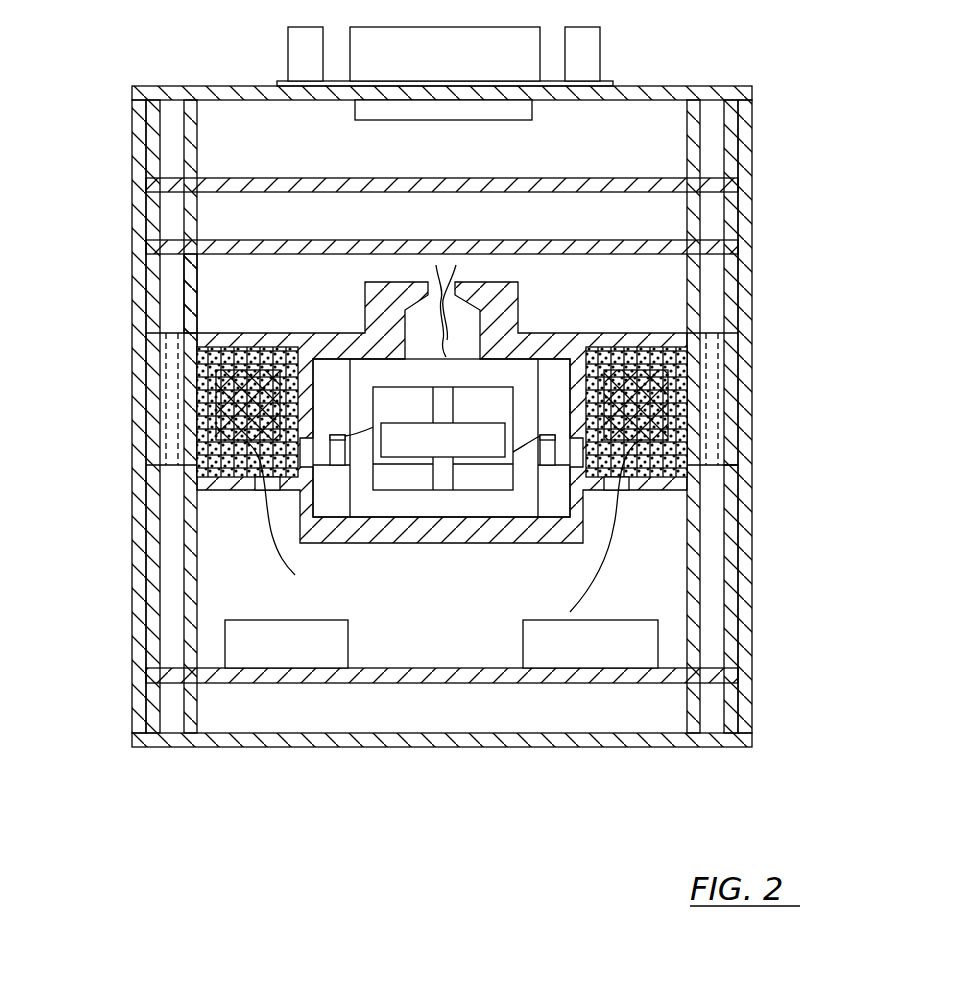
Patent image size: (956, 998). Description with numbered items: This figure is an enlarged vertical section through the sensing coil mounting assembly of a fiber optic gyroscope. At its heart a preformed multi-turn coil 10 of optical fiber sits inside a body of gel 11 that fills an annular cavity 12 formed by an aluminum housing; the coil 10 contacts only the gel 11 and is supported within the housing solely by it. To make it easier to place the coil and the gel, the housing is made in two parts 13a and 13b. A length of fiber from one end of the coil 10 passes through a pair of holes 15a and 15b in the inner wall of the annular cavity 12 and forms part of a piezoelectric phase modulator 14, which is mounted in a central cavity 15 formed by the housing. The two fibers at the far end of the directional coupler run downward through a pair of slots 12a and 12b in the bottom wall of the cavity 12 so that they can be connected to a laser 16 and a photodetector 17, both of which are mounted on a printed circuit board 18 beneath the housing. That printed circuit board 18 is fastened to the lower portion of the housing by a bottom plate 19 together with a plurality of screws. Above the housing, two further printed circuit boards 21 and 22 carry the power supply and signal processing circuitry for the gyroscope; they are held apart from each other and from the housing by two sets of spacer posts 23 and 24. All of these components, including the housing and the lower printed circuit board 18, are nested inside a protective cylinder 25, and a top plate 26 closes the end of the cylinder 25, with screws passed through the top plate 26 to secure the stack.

The multi-turn coil 10 is at (257, 362).
The body of gel 11 is at (642, 357).
The annular cavity 12 is at (211, 390).
The slot 12a is at (262, 490).
The slot 12b is at (622, 490).
The housing part 13a is at (733, 383).
The housing part 13b is at (733, 532).
The piezoelectric phase modulator 14 is at (421, 421).
The central cavity 15 is at (555, 507).
The hole 15a is at (333, 435).
The hole 15b is at (548, 435).
The laser 16 is at (325, 620).
The photodetector 17 is at (633, 620).
The printed circuit board 18 is at (413, 685).
The bottom plate 19 is at (352, 748).
The printed circuit board 21 is at (584, 240).
The printed circuit board 22 is at (574, 177).
The spacer posts 23 is at (198, 317).
The spacer posts 24 is at (198, 202).
The protective cylinder 25 is at (142, 282).
The top plate 26 is at (658, 86).